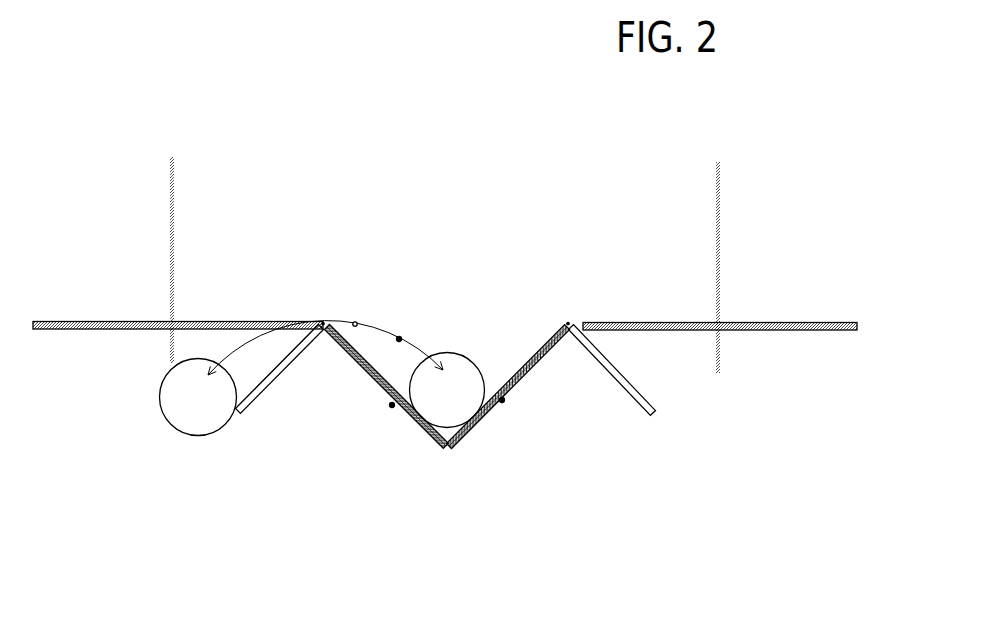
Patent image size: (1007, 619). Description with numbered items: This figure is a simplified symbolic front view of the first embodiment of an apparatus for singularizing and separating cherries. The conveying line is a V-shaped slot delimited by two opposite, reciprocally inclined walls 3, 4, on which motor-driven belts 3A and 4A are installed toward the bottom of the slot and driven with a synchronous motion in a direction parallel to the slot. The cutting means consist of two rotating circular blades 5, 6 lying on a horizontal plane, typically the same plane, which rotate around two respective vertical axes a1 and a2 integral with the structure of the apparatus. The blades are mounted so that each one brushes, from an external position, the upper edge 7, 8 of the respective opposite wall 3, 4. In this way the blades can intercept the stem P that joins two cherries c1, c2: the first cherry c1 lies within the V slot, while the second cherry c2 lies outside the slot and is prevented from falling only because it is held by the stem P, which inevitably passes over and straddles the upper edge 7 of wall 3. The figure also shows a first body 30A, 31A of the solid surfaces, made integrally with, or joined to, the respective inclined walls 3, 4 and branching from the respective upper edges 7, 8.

The opposite inclined wall 3 is at (392, 405).
The opposite inclined wall 4 is at (502, 400).
The rotating circular blade 5 is at (169, 323).
The rotating circular blade 6 is at (729, 325).
The upper edge 7 is at (323, 313).
The upper edge 8 is at (567, 313).
The motor-driven belt 3A is at (387, 387).
The motor-driven belt 4A is at (508, 387).
The first body of solid surface 30A is at (266, 395).
The first body of solid surface 31A is at (622, 393).
The stem P is at (399, 338).
The vertical axis a1 is at (174, 248).
The vertical axis a2 is at (719, 256).
The cherry c1 is at (447, 390).
The cherry c2 is at (198, 397).